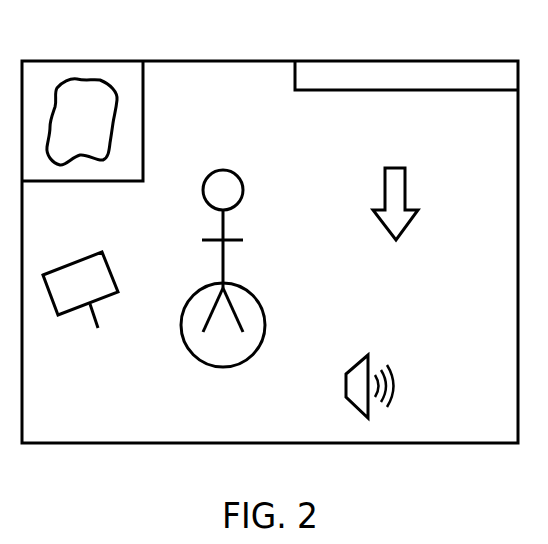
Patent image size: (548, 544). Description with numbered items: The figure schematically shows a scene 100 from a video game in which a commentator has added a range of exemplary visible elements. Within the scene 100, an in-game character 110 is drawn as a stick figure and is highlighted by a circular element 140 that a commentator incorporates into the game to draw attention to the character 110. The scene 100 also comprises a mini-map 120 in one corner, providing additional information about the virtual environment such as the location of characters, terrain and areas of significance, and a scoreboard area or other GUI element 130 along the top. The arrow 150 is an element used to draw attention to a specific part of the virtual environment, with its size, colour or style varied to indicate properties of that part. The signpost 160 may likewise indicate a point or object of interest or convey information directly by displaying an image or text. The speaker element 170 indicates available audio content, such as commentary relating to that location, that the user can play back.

The scene 100 is at (467, 494).
The in-game character 110 is at (243, 190).
The mini-map 120 is at (75, 77).
The scoreboard area or other GUI element 130 is at (369, 68).
The circular element 140 is at (216, 367).
The arrow 150 is at (410, 228).
The signpost 160 is at (70, 262).
The speaker element 170 is at (352, 372).